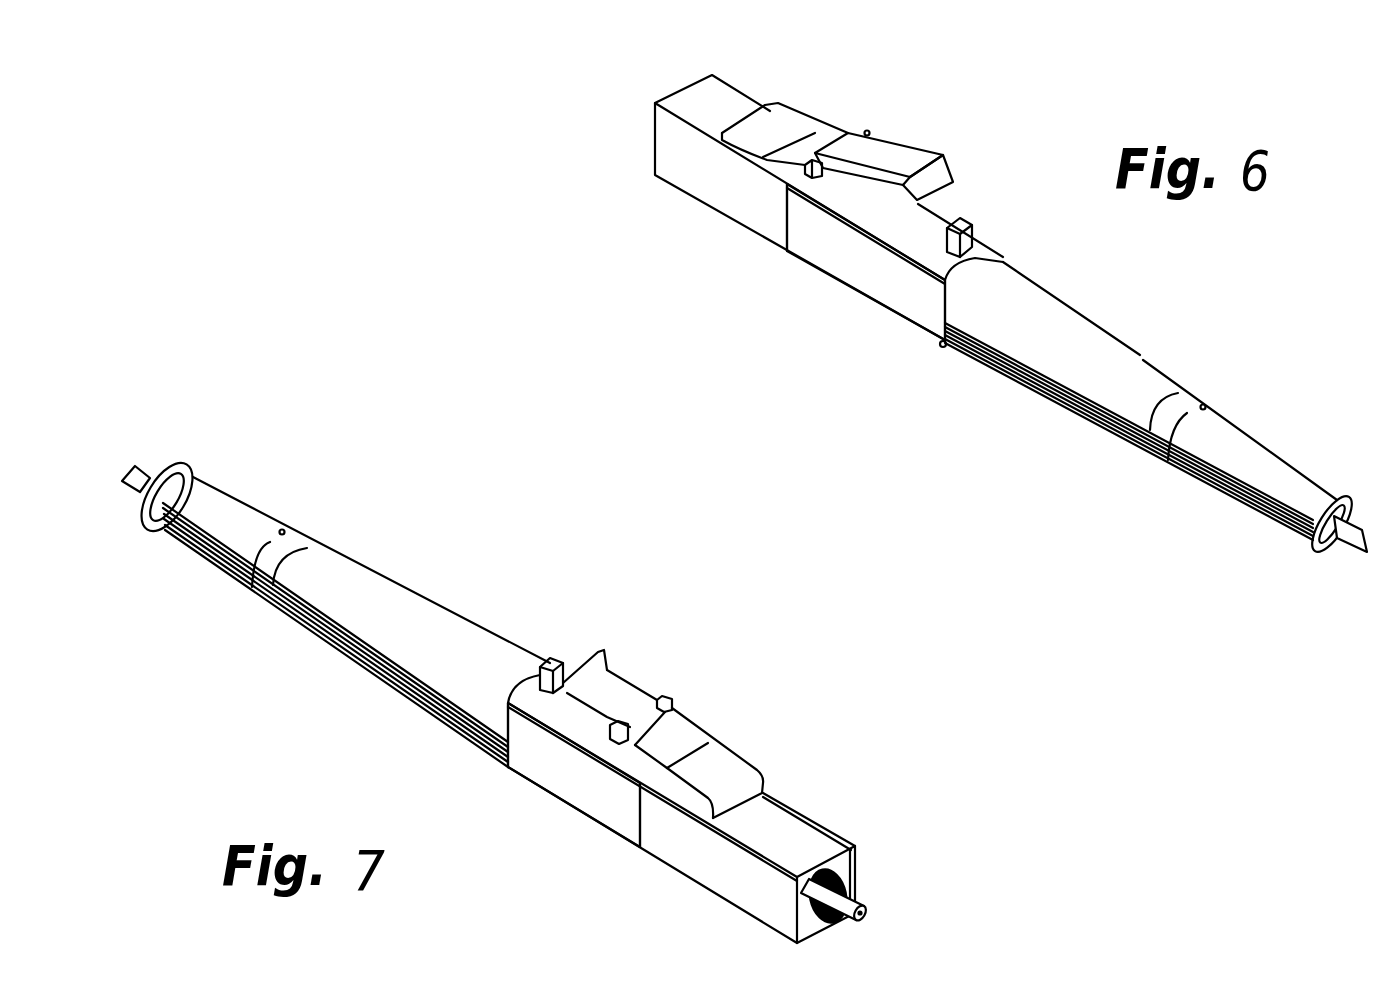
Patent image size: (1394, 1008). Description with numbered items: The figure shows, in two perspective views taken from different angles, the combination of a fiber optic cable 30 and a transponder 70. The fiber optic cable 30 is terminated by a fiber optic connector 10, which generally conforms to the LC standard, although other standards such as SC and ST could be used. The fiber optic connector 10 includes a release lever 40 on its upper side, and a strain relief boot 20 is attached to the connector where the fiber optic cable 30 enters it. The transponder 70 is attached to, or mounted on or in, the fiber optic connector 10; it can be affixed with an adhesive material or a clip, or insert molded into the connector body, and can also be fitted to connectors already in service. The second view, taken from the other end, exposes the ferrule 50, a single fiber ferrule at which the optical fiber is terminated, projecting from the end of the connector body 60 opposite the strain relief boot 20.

In FIG. 6, the fiber optic connector 10 is at (1000, 240).
In FIG. 7, the fiber optic connector 10 is at (590, 820).
In FIG. 6, the strain relief boot 20 is at (1140, 353).
In FIG. 7, the strain relief boot 20 is at (337, 647).
In FIG. 6, the fiber optic cable 30 is at (1365, 520).
In FIG. 7, the fiber optic cable 30 is at (132, 485).
In FIG. 6, the release lever 40 is at (906, 149).
In FIG. 7, the release lever 40 is at (640, 687).
In FIG. 7, the ferrule 50 is at (862, 903).
In FIG. 6, the housing front body 60 is at (907, 234).
In FIG. 7, the housing front body 60 is at (570, 728).
In FIG. 6, the transponder 70 is at (975, 234).
In FIG. 7, the transponder 70 is at (563, 660).